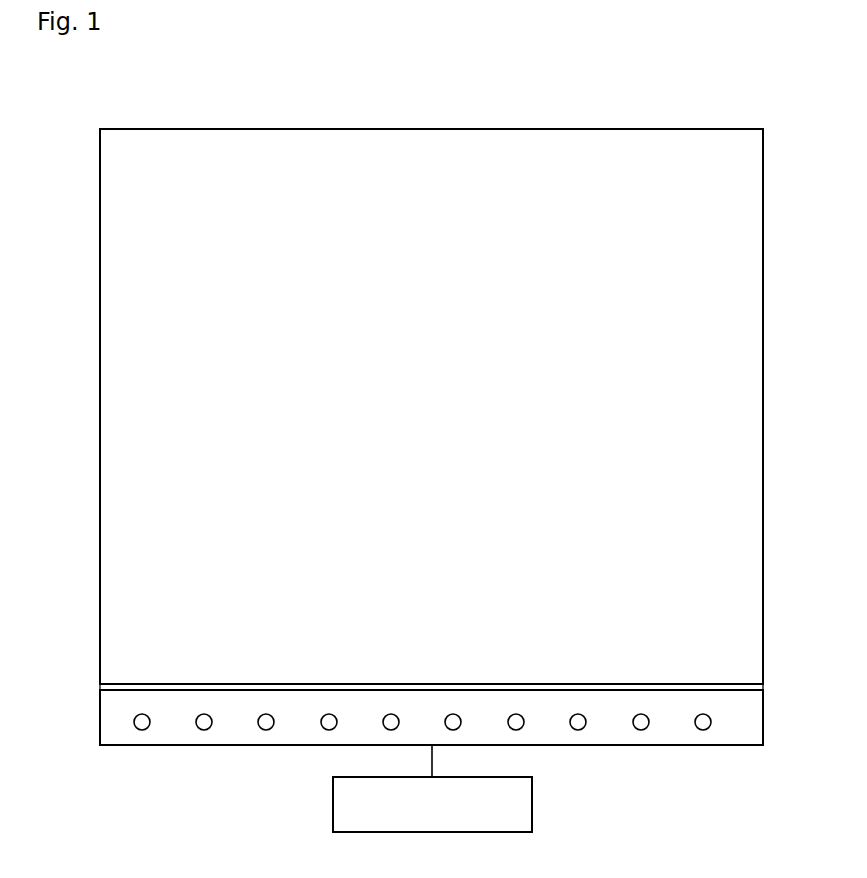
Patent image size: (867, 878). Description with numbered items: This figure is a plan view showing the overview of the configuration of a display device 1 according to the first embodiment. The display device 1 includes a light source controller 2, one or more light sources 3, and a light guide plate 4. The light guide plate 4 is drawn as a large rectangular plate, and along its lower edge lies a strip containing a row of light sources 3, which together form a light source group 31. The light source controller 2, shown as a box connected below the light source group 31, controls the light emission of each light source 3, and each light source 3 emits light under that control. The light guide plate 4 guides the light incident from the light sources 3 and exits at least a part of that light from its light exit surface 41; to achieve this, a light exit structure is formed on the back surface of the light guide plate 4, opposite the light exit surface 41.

The display device 1 is at (130, 111).
The light source controller 2 is at (535, 800).
The light source 3 is at (641, 730).
The light guide plate 4 is at (767, 200).
The light source group 31 is at (767, 718).
The light exit surface 41 is at (756, 438).